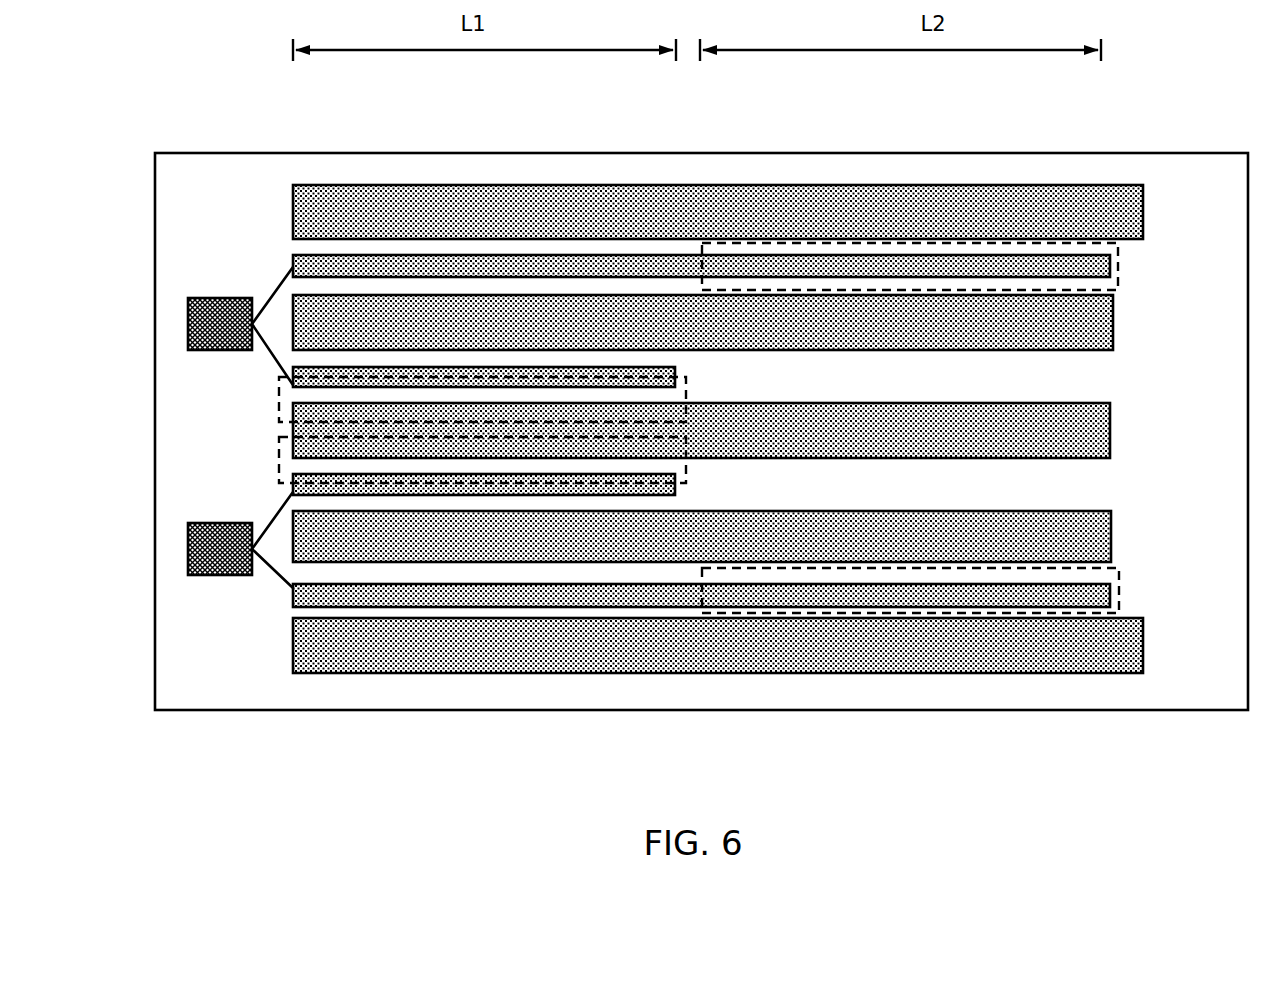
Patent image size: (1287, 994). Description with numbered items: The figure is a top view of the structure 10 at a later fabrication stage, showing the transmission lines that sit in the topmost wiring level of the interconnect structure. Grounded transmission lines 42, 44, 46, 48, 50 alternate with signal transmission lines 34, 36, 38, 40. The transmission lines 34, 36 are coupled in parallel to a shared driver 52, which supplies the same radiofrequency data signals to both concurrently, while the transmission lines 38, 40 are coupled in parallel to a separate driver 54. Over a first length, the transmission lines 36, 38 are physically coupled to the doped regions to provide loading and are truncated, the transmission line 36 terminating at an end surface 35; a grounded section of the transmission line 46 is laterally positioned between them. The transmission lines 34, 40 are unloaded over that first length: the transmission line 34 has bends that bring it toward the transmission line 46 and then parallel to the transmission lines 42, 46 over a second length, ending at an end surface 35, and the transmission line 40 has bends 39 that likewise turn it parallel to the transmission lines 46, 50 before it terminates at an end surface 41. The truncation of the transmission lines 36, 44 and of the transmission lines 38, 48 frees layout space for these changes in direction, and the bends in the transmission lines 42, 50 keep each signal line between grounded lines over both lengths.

The structure 10 is at (283, 112).
The transmission line 34 is at (1070, 272).
The end surface 35 is at (1115, 270).
The transmission line 36 is at (358, 375).
The transmission line 38 is at (335, 488).
The bends 39 is at (680, 484).
The transmission line 40 is at (1045, 591).
The end surface 41 is at (1118, 588).
The transmission line 42 is at (1108, 218).
The transmission line 44 is at (621, 320).
The transmission line 46 is at (1100, 430).
The transmission line 48 is at (560, 544).
The transmission line 50 is at (1108, 656).
The driver 52 is at (218, 315).
The driver 54 is at (226, 552).